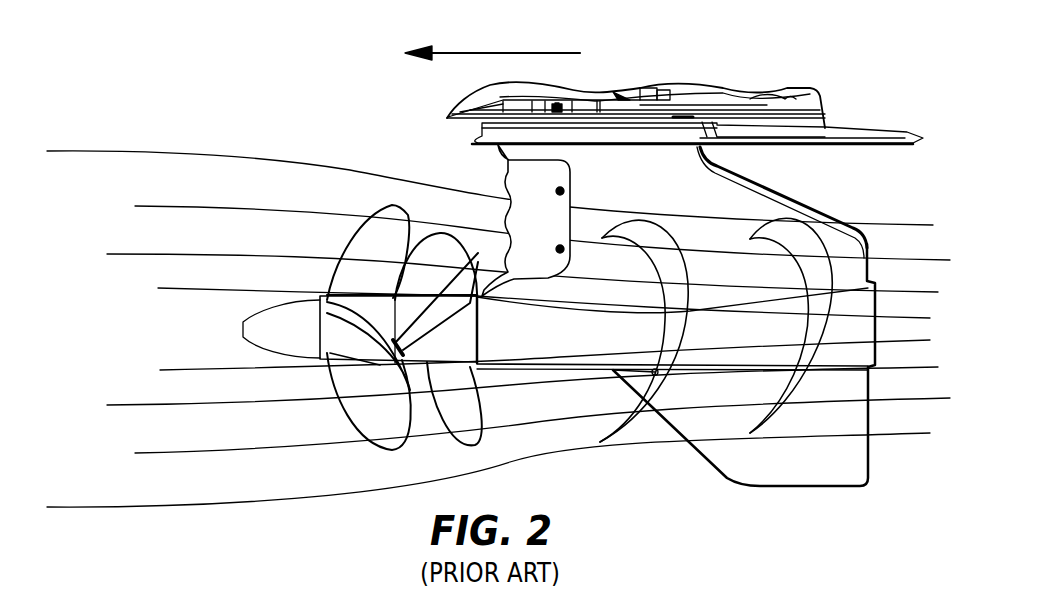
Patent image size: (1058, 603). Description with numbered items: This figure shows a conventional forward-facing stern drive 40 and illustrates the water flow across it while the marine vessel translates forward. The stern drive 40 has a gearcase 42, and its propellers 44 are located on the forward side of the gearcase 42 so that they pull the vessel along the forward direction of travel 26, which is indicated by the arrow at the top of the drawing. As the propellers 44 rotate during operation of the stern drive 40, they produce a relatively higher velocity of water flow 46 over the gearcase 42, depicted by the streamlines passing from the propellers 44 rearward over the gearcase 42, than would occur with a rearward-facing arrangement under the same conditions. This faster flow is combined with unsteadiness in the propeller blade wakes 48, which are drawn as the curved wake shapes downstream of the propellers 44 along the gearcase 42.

The forward direction of travel 26 is at (518, 52).
The forward-facing stern drive 40 is at (868, 90).
The gearcase 42 is at (772, 187).
The propellers 44 is at (297, 245).
The water flow 46 is at (252, 504).
The propeller blade wakes 48 is at (833, 248).